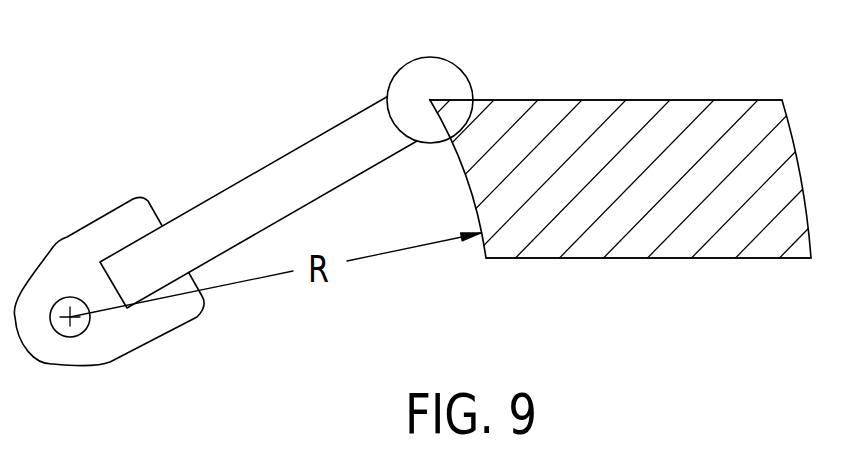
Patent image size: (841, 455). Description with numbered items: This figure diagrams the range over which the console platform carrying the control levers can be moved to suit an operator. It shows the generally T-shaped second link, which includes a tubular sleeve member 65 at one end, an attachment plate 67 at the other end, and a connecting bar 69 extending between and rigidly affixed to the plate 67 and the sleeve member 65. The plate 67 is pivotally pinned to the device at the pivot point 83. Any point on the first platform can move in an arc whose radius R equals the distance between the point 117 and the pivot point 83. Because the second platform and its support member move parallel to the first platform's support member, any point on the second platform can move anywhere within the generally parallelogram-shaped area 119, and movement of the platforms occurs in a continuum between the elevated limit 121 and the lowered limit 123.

The tubular sleeve member 65 is at (408, 60).
The attachment plate 67 is at (93, 362).
The connecting bar 69 is at (287, 150).
The pivot point 83 is at (67, 314).
The point 117 is at (430, 100).
The parallelogram-shaped area 119 is at (653, 258).
The elevated limit 121 is at (648, 100).
The lowered limit 123 is at (585, 258).